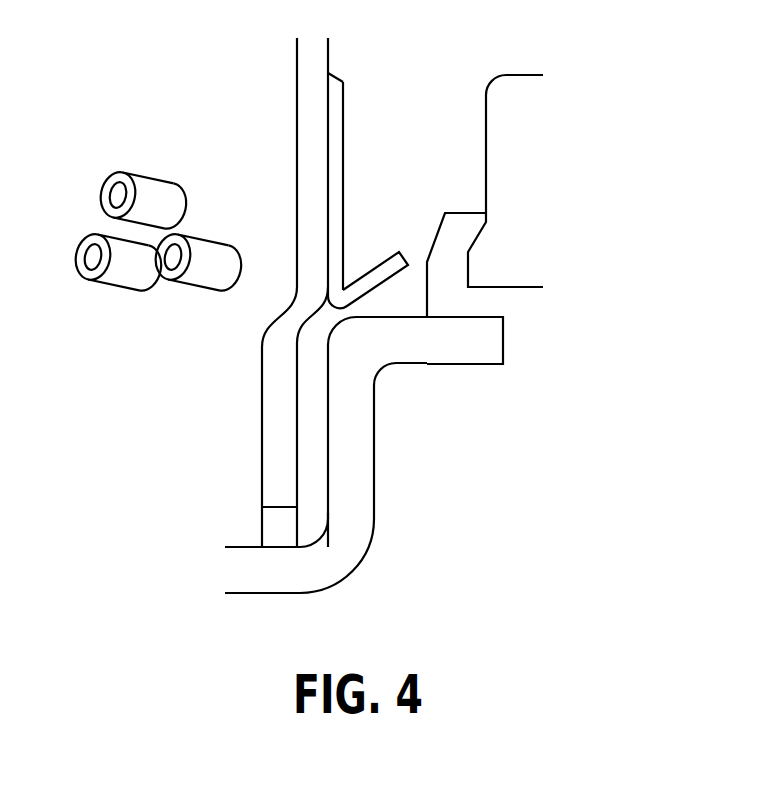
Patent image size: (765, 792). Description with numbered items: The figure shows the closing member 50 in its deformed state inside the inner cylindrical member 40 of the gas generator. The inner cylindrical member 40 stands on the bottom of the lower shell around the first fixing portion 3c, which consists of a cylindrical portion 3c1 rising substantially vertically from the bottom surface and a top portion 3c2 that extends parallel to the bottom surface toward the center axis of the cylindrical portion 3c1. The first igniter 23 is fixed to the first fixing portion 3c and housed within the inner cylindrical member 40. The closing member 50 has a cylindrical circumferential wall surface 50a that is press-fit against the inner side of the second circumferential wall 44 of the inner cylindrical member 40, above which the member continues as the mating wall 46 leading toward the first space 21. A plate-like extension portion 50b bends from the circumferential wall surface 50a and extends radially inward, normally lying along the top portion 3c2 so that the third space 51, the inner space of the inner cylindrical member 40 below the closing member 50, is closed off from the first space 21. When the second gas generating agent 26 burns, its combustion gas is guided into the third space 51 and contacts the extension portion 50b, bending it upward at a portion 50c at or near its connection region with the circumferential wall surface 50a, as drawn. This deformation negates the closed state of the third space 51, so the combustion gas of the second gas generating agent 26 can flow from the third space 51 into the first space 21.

The first fixing portion 3c is at (402, 457).
The cylindrical portion 3c1 is at (352, 445).
The top portion 3c2 is at (442, 343).
The first space 21 is at (485, 158).
The first igniter 23 is at (515, 100).
The second gas generating agent 26 is at (123, 173).
The inner cylindrical member 40 is at (237, 292).
The second circumferential wall 44 is at (307, 125).
The mating wall 46 is at (270, 525).
The closing member 50 is at (374, 158).
The circumferential wall surface 50a is at (345, 103).
The extension portion 50b is at (393, 253).
The portion 50c is at (345, 282).
The third space 51 is at (312, 410).